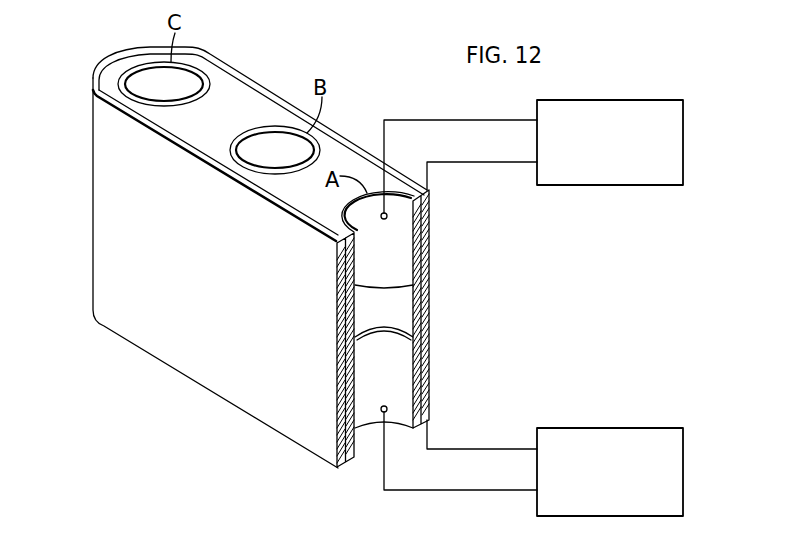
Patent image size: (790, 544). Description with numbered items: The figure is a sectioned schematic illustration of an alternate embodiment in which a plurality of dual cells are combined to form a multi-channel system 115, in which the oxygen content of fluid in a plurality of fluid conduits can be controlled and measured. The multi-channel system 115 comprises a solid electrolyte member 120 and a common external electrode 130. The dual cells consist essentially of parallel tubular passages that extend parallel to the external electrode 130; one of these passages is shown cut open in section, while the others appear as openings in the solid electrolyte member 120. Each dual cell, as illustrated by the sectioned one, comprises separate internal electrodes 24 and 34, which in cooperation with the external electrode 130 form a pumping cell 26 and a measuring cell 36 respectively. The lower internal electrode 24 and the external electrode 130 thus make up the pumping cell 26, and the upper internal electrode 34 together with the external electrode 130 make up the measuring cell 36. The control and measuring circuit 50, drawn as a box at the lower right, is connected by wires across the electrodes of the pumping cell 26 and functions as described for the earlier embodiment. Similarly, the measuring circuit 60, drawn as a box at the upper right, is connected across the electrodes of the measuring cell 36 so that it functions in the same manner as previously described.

The multi-channel system 115 is at (72, 243).
The solid electrolyte member 120 is at (343, 151).
The common external electrode 130 is at (430, 206).
The measuring cell 36 is at (395, 266).
The internal electrode 34 is at (402, 270).
The pumping cell 26 is at (395, 384).
The internal electrode 24 is at (405, 365).
The measuring circuit 60 is at (627, 100).
The control and measuring circuit 50 is at (630, 428).